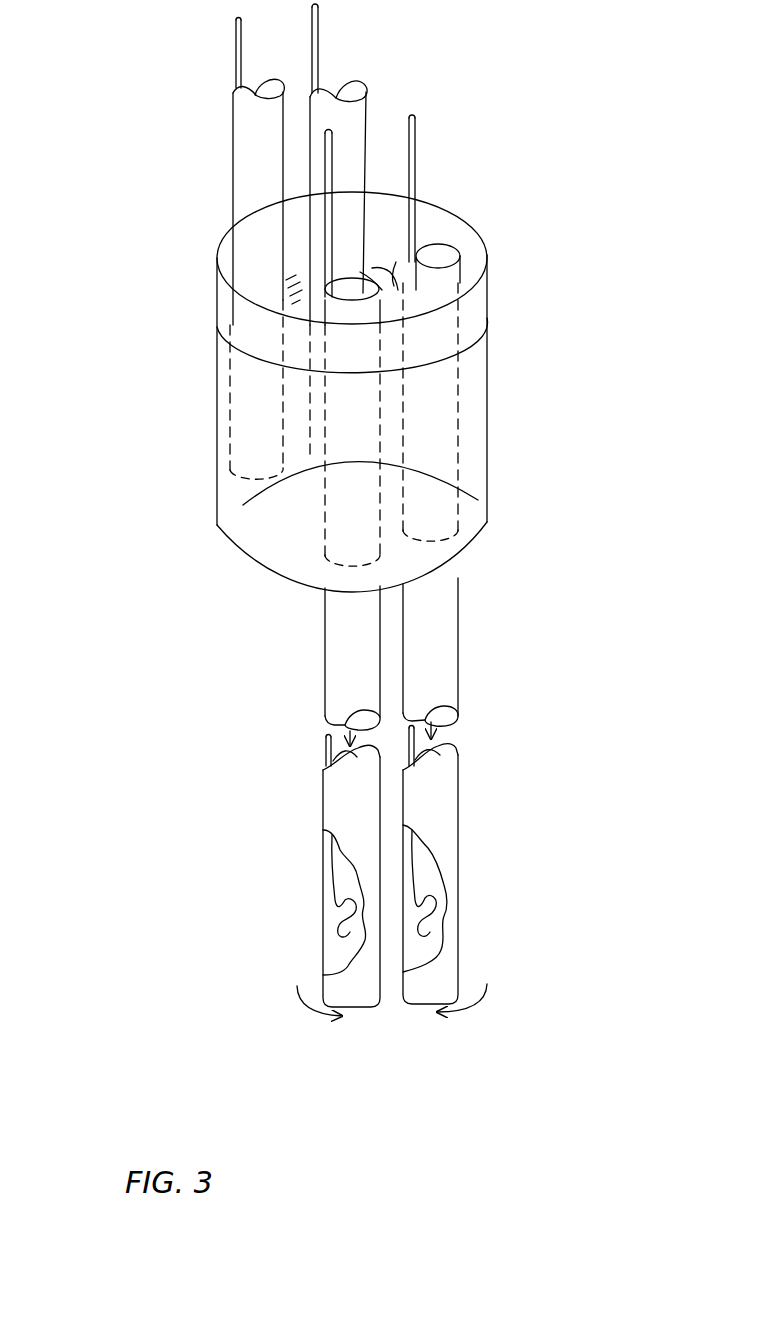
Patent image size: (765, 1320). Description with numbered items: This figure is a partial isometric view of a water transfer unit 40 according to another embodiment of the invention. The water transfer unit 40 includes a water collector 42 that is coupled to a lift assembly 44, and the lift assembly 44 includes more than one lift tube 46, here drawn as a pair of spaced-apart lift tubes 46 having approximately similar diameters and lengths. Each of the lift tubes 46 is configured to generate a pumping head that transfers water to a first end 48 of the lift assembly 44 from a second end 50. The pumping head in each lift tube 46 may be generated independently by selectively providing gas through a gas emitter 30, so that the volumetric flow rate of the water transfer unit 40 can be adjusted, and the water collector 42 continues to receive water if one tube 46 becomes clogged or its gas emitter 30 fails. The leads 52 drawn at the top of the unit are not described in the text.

The water transfer unit 40 is at (152, 134).
The water collector 42 is at (489, 457).
The lift assembly 44 is at (484, 682).
The lift tube 46 is at (322, 800).
The first end 48 is at (434, 235).
The second end 50 is at (386, 1034).
The electrode leads 52 is at (332, 164).
The gas emitter 30 is at (337, 929).